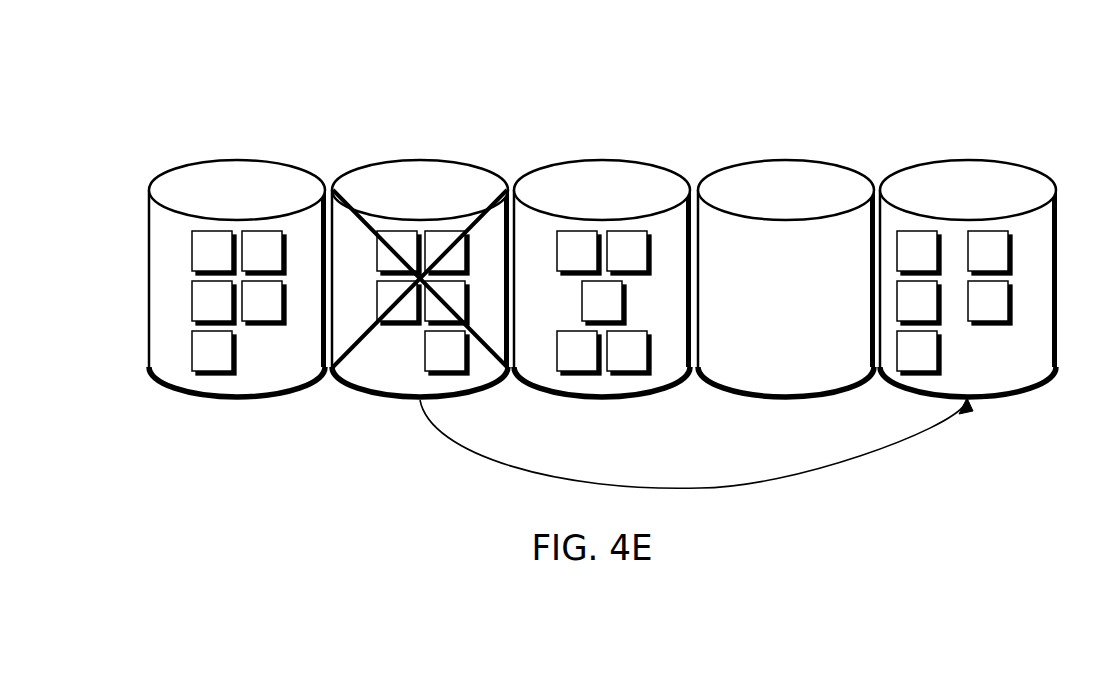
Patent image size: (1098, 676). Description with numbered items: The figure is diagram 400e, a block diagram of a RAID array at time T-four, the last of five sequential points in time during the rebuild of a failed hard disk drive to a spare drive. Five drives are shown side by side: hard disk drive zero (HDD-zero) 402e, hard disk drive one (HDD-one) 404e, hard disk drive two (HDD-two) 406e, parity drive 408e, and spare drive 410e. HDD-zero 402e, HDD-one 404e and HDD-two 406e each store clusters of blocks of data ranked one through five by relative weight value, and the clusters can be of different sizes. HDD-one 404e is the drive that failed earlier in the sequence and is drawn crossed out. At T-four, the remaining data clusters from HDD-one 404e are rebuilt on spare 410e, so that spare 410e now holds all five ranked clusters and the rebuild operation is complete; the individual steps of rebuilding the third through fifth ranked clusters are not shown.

The diagram 400e is at (1030, 82).
The hard disk drive 0 (HDD0) 402e is at (239, 160).
The hard disk drive 1 (HDD1) 404e is at (422, 160).
The hard disk drive 2 (HDD2) 406e is at (604, 160).
The parity drive 408e is at (788, 160).
The spare drive 410e is at (970, 160).